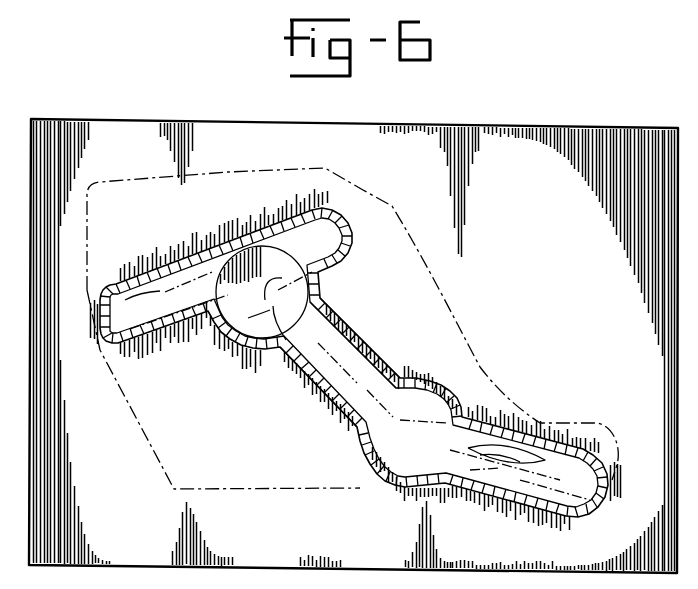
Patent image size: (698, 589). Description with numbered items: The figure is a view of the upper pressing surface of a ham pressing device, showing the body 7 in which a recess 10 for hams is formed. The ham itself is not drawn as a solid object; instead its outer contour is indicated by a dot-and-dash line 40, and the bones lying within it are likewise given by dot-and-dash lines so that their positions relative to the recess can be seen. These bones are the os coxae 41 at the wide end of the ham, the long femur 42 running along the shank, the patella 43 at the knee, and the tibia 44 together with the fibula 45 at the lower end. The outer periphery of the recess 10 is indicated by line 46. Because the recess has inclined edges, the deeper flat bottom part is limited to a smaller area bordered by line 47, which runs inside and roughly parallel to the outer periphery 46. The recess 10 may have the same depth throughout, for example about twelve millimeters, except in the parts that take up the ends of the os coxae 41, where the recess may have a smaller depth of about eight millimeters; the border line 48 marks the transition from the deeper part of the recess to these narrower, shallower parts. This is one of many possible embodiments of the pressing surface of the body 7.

The body 7 is at (592, 150).
The recess 10 is at (418, 385).
The dot-and-dash-line 40 is at (466, 333).
The os coxae 41 is at (174, 268).
The femur 42 is at (310, 383).
The patella 43 is at (352, 460).
The tibia 44 is at (478, 494).
The fibula 45 is at (543, 418).
The outer periphery 46 is at (379, 362).
The line 47 is at (350, 332).
The border line 48 is at (221, 262).